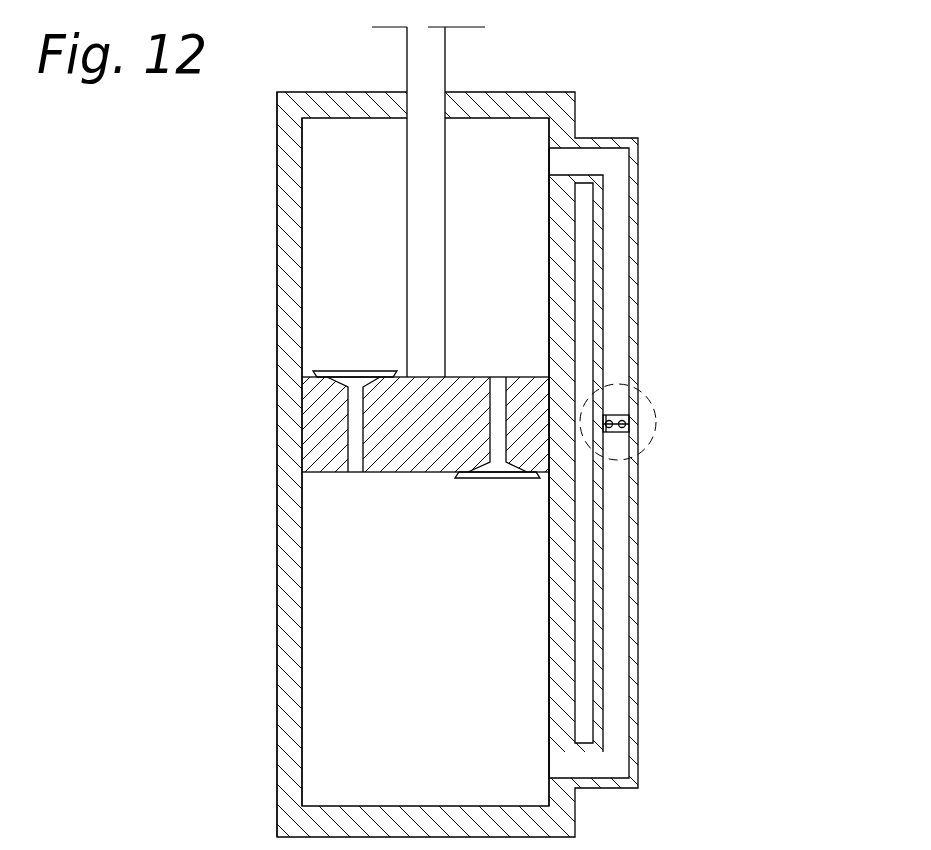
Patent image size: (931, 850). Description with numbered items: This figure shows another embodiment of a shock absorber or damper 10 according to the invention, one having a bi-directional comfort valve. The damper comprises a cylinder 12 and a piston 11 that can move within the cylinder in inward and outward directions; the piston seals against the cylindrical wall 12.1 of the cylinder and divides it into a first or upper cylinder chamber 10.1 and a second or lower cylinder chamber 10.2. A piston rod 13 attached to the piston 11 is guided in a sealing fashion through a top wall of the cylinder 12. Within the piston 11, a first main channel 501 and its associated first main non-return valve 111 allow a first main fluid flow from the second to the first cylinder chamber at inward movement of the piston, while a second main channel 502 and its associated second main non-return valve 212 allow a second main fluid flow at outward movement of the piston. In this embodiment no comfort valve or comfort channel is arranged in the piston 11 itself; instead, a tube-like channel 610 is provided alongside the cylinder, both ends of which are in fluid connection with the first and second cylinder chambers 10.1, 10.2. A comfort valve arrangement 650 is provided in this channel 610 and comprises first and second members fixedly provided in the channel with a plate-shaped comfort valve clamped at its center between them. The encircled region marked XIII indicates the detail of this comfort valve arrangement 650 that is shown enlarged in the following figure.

The shock absorber or damper 10 is at (627, 108).
The first cylinder chamber 10.1 is at (347, 170).
The second cylinder chamber 10.2 is at (370, 632).
The piston 11 is at (422, 460).
The cylinder 12 is at (345, 110).
The cylindrical wall 12.1 is at (288, 236).
The piston rod 13 is at (427, 70).
The first main non-return valve 111 is at (337, 371).
The second main non-return valve 212 is at (498, 477).
The first main channel 501 is at (355, 432).
The second main channel 502 is at (497, 434).
The tube-like channel 610 is at (618, 732).
The comfort valve arrangement 650 is at (620, 402).
The section detail XIII indicator XIII is at (659, 415).